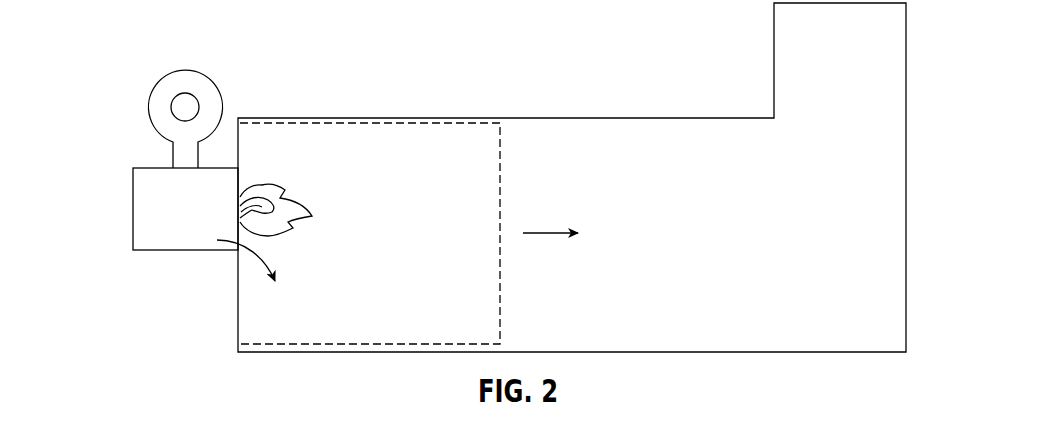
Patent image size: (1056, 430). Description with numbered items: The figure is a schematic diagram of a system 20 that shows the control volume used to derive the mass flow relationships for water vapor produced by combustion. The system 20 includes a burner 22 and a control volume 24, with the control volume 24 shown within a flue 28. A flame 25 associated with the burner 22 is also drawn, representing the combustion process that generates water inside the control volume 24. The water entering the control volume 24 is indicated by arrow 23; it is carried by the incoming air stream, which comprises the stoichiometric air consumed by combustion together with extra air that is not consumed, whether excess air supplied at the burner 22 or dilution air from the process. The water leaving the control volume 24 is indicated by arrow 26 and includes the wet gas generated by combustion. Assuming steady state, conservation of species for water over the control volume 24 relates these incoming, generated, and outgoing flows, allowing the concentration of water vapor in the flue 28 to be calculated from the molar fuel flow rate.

The system 20 is at (284, 64).
The burner 22 is at (132, 210).
The arrow indicating water entering the control volume 23 is at (253, 251).
The control volume 24 is at (354, 123).
The flame 25 is at (262, 185).
The arrow indicating water leaving the control volume 26 is at (548, 233).
The flue 28 is at (907, 178).